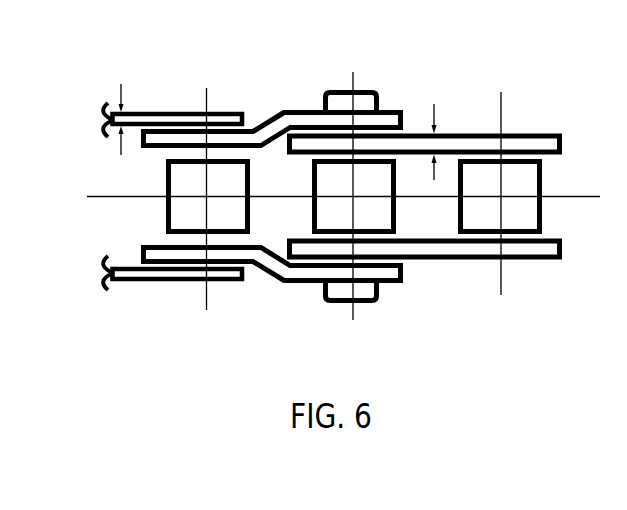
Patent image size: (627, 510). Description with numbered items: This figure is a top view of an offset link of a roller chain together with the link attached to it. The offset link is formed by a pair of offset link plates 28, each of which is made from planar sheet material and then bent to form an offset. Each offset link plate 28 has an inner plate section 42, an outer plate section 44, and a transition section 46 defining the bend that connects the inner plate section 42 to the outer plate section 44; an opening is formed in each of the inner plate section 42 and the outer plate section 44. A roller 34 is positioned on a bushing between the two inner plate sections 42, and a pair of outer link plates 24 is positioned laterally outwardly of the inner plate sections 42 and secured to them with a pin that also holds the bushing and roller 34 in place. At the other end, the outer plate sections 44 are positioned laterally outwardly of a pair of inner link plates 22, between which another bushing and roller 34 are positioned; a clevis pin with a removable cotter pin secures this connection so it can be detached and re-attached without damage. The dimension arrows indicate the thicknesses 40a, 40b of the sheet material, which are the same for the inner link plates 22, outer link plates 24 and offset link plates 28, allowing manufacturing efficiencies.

The inner link plates 22 is at (532, 252).
The outer link plates 24 is at (152, 278).
The offset link plates 28 is at (398, 280).
The roller 34 is at (532, 185).
The thickness 40a is at (433, 129).
The thickness 40b is at (120, 85).
The inner plate section 42 is at (170, 138).
The outer plate section 44 is at (307, 116).
The transition section 46 is at (262, 124).